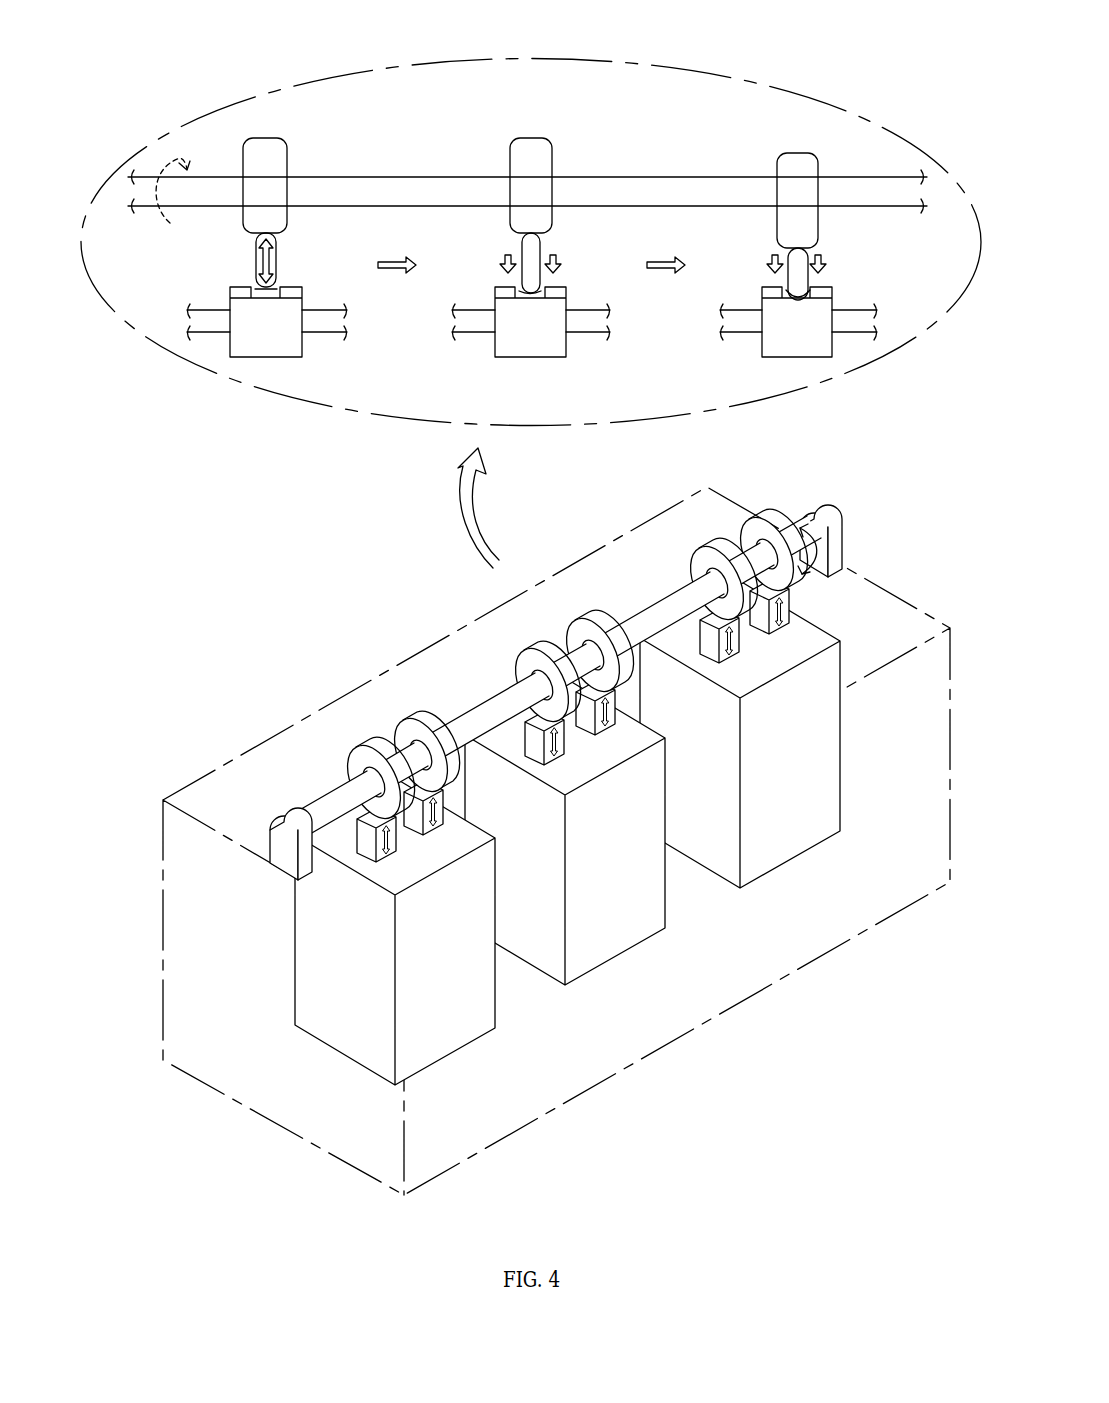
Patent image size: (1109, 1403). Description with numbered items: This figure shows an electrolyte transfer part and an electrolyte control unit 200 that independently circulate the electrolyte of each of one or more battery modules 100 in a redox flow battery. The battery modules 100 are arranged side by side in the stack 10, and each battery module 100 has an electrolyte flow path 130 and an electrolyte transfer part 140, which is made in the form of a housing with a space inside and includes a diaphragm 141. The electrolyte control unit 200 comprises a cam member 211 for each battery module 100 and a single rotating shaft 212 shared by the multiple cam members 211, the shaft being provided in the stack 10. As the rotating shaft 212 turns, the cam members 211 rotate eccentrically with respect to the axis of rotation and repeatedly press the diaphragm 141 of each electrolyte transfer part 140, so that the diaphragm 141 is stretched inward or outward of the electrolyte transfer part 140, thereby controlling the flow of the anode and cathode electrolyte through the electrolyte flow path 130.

The stack 10 is at (330, 690).
The battery module 100 is at (312, 980).
The electrolyte flow path 130 is at (322, 325).
The electrolyte transfer part 140 is at (247, 340).
The diaphragm 141 is at (262, 292).
The electrolyte control unit 200 is at (840, 162).
The cam member 211 is at (787, 175).
The rotating shaft 212 is at (617, 190).